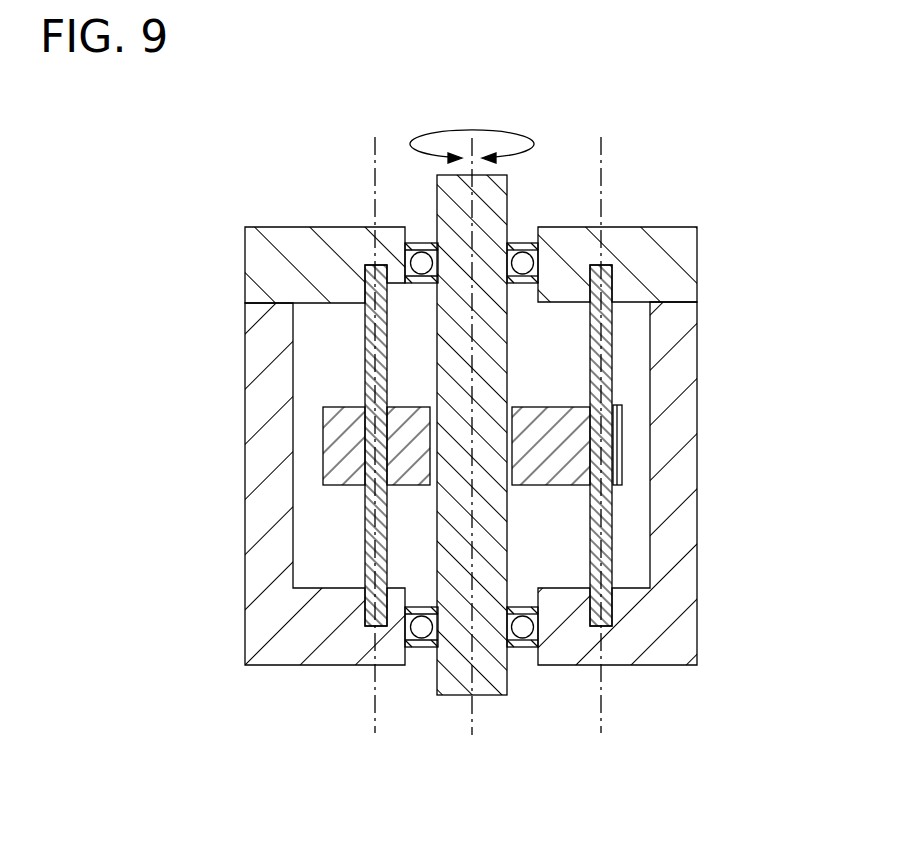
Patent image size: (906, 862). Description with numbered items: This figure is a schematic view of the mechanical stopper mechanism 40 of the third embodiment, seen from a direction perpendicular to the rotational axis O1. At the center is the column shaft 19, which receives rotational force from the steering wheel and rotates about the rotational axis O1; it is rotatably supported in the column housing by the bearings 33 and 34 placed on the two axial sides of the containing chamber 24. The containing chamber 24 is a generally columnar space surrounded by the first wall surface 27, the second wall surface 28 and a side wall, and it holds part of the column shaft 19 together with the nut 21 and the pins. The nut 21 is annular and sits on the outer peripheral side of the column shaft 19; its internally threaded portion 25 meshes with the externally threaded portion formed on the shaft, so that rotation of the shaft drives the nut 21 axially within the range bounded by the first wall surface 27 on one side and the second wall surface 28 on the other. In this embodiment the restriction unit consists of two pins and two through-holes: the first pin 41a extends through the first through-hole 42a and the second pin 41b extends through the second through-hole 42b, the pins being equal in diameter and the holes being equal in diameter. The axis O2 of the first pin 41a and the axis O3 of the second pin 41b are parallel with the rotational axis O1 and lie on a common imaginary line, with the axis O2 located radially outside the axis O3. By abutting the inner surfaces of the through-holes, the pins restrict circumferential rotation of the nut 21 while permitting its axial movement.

The column shaft 19 is at (430, 669).
The nut 21 is at (627, 449).
The containing chamber 24 is at (624, 563).
The internally threaded portion 25 is at (510, 487).
The first wall surface 27 is at (300, 305).
The second wall surface 28 is at (296, 582).
The bearing 33 is at (510, 243).
The bearing 34 is at (511, 650).
The mechanical stopper mechanism 40 is at (688, 445).
The first pin 41a is at (602, 525).
The second pin 41b is at (368, 510).
The first through-hole 42a is at (610, 397).
The second through-hole 42b is at (372, 404).
The rotational axis O1 is at (470, 168).
The axis of the first pin O2 is at (602, 183).
The axis of the second pin O3 is at (375, 178).